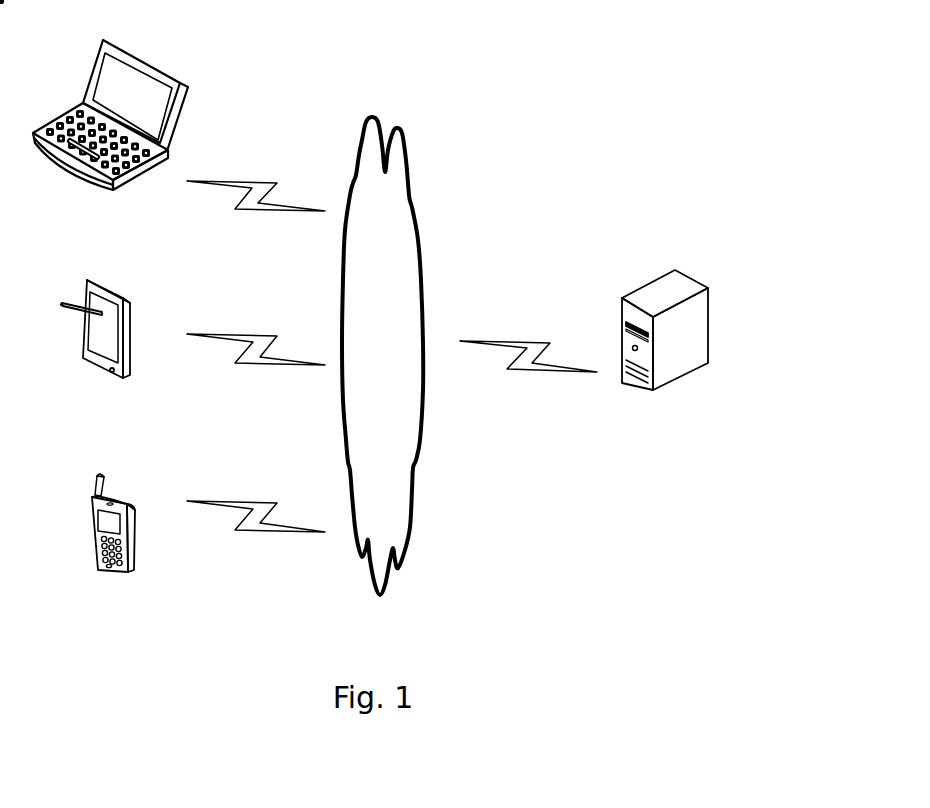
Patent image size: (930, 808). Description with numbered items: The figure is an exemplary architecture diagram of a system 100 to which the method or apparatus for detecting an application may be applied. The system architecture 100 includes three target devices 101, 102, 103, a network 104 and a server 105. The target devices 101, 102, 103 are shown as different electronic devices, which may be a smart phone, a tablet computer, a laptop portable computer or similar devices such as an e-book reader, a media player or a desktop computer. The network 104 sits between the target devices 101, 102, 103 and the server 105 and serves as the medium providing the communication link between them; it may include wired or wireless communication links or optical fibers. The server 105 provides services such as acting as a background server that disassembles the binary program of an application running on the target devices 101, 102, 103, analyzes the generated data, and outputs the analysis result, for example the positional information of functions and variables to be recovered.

The system architecture 100 is at (583, 30).
The target device 101 is at (113, 543).
The target device 102 is at (95, 348).
The target device 103 is at (94, 113).
The network 104 is at (382, 356).
The server 105 is at (665, 353).